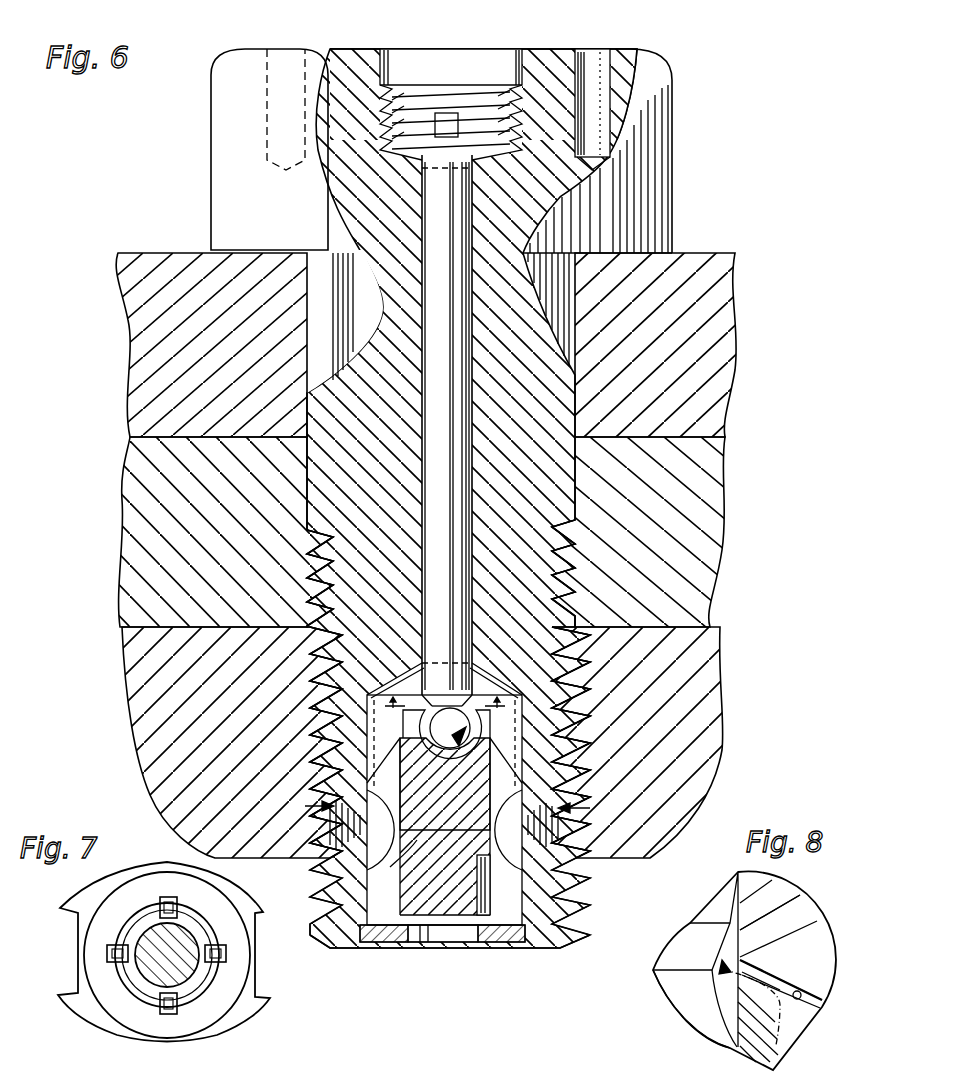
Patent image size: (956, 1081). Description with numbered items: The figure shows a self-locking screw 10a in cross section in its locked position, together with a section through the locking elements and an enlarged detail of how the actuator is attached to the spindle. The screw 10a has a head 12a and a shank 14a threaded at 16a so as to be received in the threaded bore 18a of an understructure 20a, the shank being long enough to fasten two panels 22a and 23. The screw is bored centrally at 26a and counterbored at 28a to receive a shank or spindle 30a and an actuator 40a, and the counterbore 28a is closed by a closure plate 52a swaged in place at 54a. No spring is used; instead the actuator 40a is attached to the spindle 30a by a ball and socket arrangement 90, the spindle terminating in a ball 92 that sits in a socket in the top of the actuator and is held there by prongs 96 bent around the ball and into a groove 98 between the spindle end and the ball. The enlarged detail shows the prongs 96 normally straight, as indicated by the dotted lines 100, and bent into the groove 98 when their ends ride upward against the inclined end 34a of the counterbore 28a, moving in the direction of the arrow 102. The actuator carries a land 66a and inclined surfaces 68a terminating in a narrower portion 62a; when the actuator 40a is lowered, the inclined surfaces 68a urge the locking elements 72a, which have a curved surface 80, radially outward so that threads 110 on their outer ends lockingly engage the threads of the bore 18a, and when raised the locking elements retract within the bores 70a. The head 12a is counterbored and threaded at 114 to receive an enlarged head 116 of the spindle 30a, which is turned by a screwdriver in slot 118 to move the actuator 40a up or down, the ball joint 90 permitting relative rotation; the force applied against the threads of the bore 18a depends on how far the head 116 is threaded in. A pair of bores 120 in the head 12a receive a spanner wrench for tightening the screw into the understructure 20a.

In FIG. 6, the screw 10a is at (688, 206).
In FIG. 6, the head 12a is at (676, 119).
In FIG. 6, the shank 14a is at (555, 422).
In FIG. 8, the shank 14a is at (752, 902).
In FIG. 6, the threads 16a is at (570, 661).
In FIG. 6, the threaded bore 18a is at (565, 716).
In FIG. 6, the understructure 20a is at (710, 655).
In FIG. 6, the panel 22a is at (708, 333).
In FIG. 6, the panel 23 is at (715, 497).
In FIG. 6, the central bore 26a is at (460, 425).
In FIG. 6, the counterbore 28a is at (508, 726).
In FIG. 6, the spindle 30a is at (471, 430).
In FIG. 7, the spindle 30a is at (160, 973).
In FIG. 8, the spindle 30a is at (712, 913).
In FIG. 8, the inclined end 34a is at (803, 988).
In FIG. 6, the actuator 40a is at (470, 883).
In FIG. 6, the closure plate 52a is at (506, 943).
In FIG. 6, the swaged portion 54a is at (378, 950).
In FIG. 6, the narrower portion 62a is at (446, 933).
In FIG. 6, the land 66a is at (404, 778).
In FIG. 6, the inclined surfaces 68a is at (490, 850).
In FIG. 6, the bores 70a is at (578, 871).
In FIG. 6, the locking elements 72a is at (312, 806).
In FIG. 6, the curved semicircular surface 80 is at (505, 806).
In FIG. 6, the ball and socket arrangement 90 is at (508, 754).
In FIG. 6, the ball 92 is at (430, 726).
In FIG. 7, the ball 92 is at (137, 982).
In FIG. 8, the ball 92 is at (706, 1000).
In FIG. 6, the prongs 96 is at (476, 712).
In FIG. 7, the prongs 96 is at (169, 897).
In FIG. 8, the prongs 96 is at (760, 1033).
In FIG. 6, the groove 98 is at (458, 712).
In FIG. 8, the groove 98 is at (728, 967).
In FIG. 8, the dotted lines 100 is at (796, 937).
In FIG. 6, the arrow 102 is at (453, 745).
In FIG. 8, the arrow 102 is at (757, 919).
In FIG. 6, the threads 110 is at (330, 822).
In FIG. 6, the threaded counterbore 114 is at (503, 90).
In FIG. 6, the enlarged head 116 is at (405, 128).
In FIG. 6, the slot 118 is at (452, 125).
In FIG. 6, the bores 120 is at (276, 70).